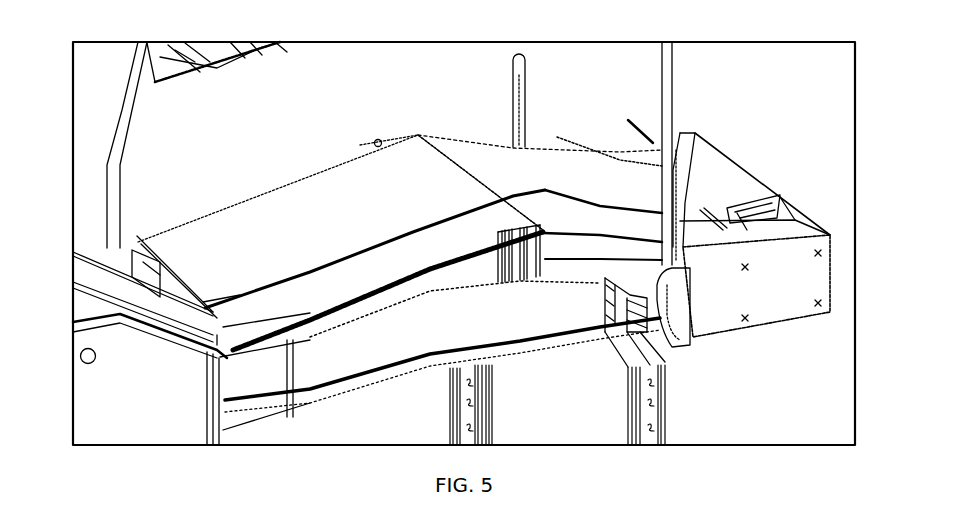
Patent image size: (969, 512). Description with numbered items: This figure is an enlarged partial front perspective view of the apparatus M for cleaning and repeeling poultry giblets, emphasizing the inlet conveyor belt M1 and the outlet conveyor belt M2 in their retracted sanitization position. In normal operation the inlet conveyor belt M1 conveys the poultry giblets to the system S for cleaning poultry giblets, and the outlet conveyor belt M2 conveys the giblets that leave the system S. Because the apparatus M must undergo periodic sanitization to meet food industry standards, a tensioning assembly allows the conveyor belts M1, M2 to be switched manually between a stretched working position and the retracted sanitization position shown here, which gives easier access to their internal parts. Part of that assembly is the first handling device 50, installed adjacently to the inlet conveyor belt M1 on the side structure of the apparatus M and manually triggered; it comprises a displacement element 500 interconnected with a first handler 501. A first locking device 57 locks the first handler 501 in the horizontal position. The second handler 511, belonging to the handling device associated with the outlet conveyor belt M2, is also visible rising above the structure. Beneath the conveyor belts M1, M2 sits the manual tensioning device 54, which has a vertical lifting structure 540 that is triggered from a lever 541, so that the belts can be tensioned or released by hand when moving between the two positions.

The apparatus M is at (807, 68).
The inlet conveyor belt M1 is at (437, 228).
The outlet conveyor belt M2 is at (320, 202).
The system for cleaning poultry giblets S is at (116, 419).
The first handling device 50 is at (679, 366).
The displacement element 500 is at (680, 322).
The first handler 501 is at (680, 213).
The second handler 511 is at (521, 83).
The manual tensioning device 54 is at (359, 126).
The vertical lifting structure 540 is at (523, 263).
The lever 541 is at (380, 140).
The first locking device 57 is at (627, 305).